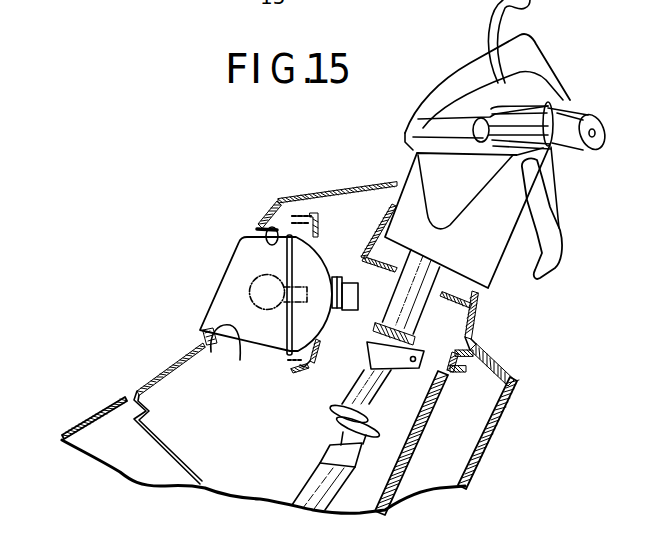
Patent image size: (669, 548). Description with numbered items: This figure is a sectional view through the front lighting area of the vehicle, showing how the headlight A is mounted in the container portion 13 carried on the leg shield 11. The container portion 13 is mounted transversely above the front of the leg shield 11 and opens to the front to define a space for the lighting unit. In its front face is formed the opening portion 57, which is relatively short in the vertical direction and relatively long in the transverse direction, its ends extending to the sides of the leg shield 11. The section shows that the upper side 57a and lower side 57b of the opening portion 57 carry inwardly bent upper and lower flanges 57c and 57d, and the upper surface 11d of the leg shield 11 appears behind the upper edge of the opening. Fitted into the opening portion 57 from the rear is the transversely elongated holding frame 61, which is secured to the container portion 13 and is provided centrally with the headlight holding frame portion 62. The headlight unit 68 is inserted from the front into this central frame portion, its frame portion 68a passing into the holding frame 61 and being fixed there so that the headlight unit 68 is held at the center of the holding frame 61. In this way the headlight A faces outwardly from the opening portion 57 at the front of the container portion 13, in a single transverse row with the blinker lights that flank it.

The leg shield 11 is at (263, 213).
The upper surface of the leg shield 11d is at (354, 188).
The container portion 13 is at (389, 307).
The opening portion 57 is at (203, 338).
The upper side of the opening portion 57a is at (256, 228).
The lower side of the opening portion 57b is at (208, 348).
The upper flange 57c is at (277, 228).
The lower flange 57d is at (240, 358).
The holding frame 61 is at (364, 234).
The headlight holding frame portion 62 is at (320, 348).
The headlight unit 68 is at (236, 303).
The frame portion of the headlight unit 68a is at (289, 364).
The headlight A is at (228, 272).